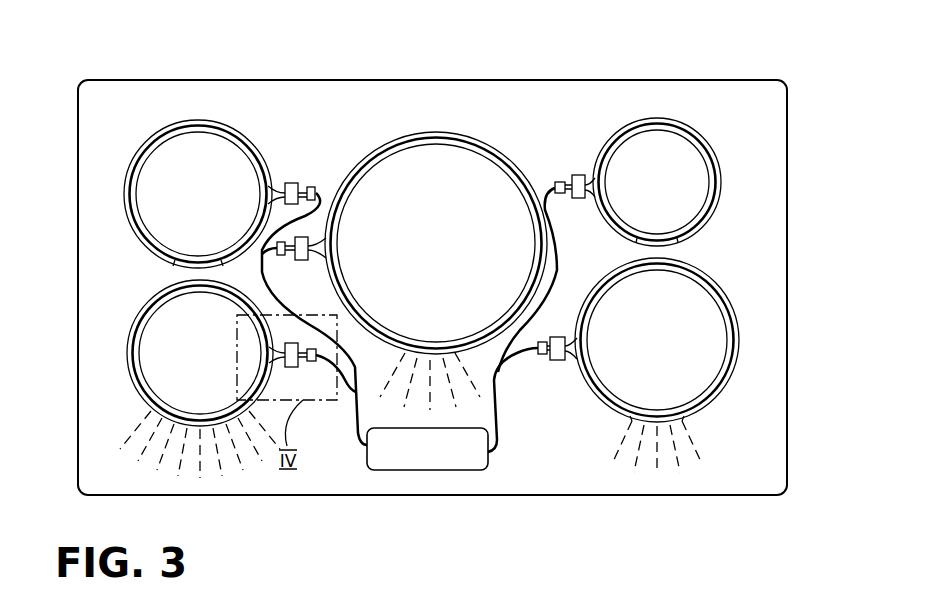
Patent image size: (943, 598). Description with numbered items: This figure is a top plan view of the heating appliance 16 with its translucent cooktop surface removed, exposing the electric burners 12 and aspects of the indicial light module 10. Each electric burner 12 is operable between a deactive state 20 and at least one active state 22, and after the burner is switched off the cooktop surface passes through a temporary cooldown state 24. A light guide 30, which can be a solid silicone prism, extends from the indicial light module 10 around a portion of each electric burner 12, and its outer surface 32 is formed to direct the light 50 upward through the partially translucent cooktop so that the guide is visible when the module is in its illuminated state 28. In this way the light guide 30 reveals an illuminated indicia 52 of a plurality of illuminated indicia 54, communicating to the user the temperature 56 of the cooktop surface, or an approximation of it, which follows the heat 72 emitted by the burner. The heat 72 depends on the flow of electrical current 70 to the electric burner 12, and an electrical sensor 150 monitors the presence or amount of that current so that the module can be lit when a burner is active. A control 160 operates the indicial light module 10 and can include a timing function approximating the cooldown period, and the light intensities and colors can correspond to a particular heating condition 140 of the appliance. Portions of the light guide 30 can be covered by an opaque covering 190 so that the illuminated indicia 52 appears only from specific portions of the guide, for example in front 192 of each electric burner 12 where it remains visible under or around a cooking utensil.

The heating appliance 16 is at (162, 57).
The electric burner 12 is at (167, 208).
The indicial light module 10 is at (290, 170).
The electrical sensor 150 is at (313, 184).
The temporary cooldown state 24 is at (420, 125).
The deactive state 20 is at (602, 135).
The heat 72 is at (702, 265).
The temperature 56 is at (697, 317).
The opaque covering 190 is at (737, 308).
The light 50 is at (700, 427).
The plurality of illuminated indicia 54 is at (640, 477).
The front 192 is at (690, 450).
The light guide 30 is at (123, 363).
The heating condition 140 is at (120, 325).
The outer surface 32 is at (150, 410).
The active state 22 is at (208, 450).
The illuminated state 28 is at (301, 377).
The control 160 is at (427, 475).
The illuminated indicia 52 is at (470, 392).
The electrical current 70 is at (503, 370).